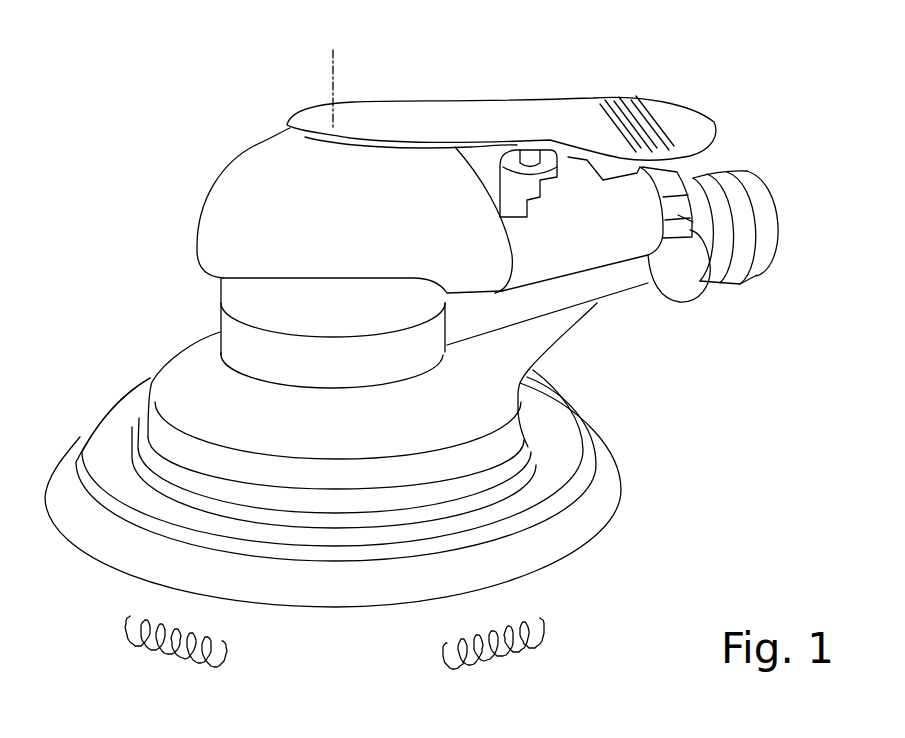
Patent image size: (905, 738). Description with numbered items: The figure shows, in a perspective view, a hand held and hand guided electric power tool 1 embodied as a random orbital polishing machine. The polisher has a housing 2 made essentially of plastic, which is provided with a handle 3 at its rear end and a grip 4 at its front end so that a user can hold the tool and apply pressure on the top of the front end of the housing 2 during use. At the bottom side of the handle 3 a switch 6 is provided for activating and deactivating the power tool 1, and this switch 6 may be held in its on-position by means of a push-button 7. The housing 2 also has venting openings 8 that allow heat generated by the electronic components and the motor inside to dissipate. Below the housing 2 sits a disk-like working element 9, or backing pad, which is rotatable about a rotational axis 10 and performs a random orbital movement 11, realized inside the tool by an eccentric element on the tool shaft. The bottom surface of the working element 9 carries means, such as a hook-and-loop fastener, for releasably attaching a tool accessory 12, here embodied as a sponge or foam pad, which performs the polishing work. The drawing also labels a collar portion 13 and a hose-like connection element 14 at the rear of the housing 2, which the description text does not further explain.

The electric power tool 1 is at (104, 78).
The housing 2 is at (620, 280).
The handle 3 is at (630, 110).
The grip 4 is at (243, 180).
The switch 6 is at (380, 120).
The push-button 7 is at (577, 197).
The venting openings 8 is at (188, 367).
The working element 9 is at (553, 462).
The rotational axis 10 is at (333, 610).
The random orbital movement 11 is at (520, 650).
The tool accessory 12 is at (573, 527).
The connecting collar 13 is at (707, 287).
The hose connection 14 is at (763, 270).